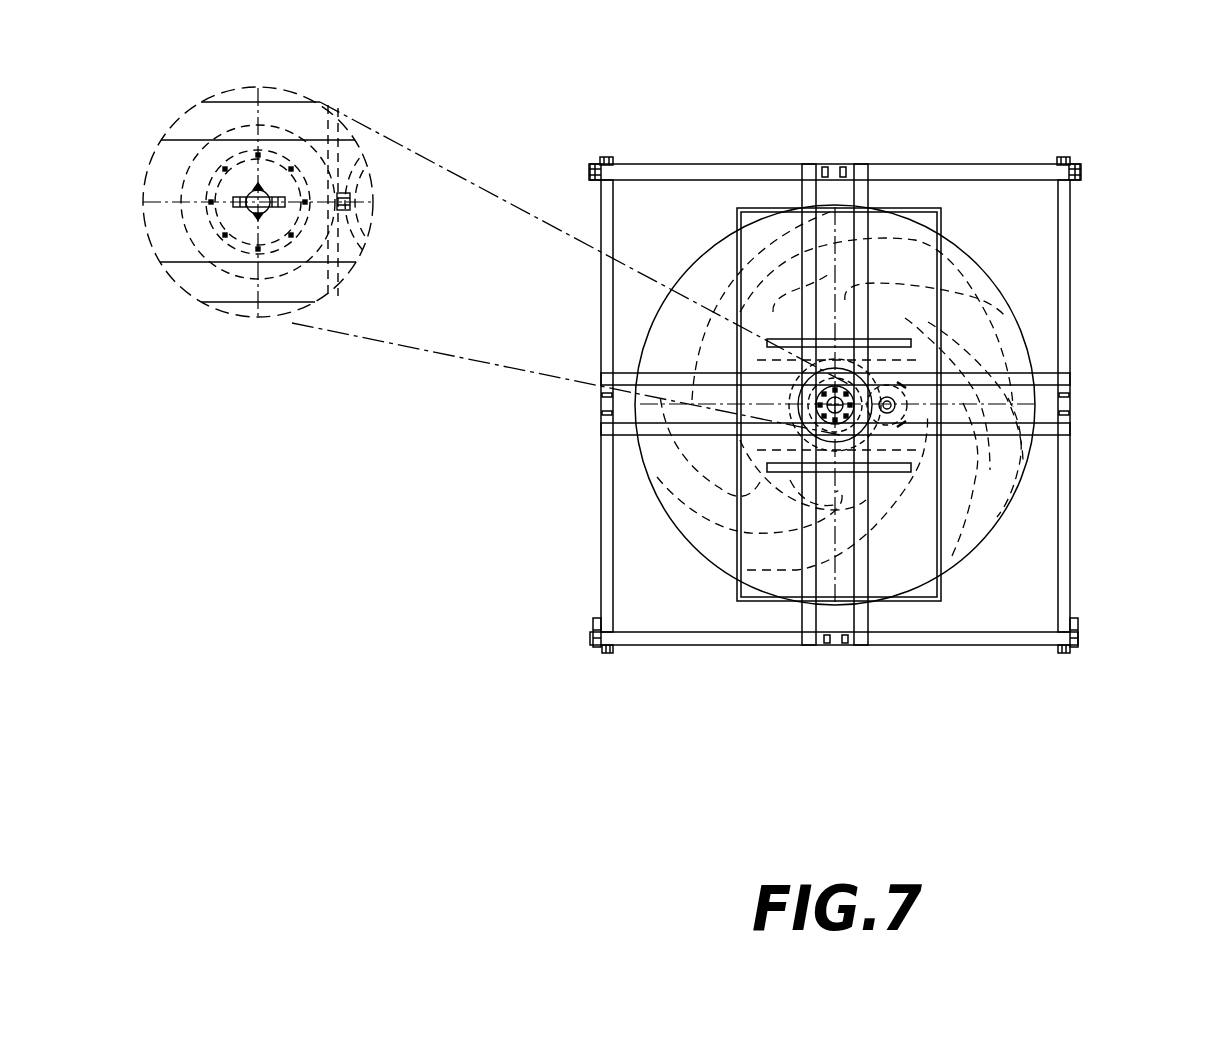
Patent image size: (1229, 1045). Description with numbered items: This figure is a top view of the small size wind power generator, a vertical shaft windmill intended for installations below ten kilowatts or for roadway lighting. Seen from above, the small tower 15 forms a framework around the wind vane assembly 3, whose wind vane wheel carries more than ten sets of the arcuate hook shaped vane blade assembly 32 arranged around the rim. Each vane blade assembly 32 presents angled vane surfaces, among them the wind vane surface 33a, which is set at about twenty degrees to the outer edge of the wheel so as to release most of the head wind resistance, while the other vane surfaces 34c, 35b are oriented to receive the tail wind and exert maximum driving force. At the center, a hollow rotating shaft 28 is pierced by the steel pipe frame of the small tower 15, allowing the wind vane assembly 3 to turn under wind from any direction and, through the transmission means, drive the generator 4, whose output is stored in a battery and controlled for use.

The small tower 15 is at (1060, 222).
The arcuate hook shaped vane blade assembly 32 is at (968, 296).
The wind vane assembly 3 is at (1003, 360).
The generator 4 is at (963, 403).
The wind vane surface 33a is at (690, 337).
The blade passage 34c is at (877, 497).
The lower inner bar 35b is at (872, 585).
The hollow rotating shaft 28 is at (268, 215).